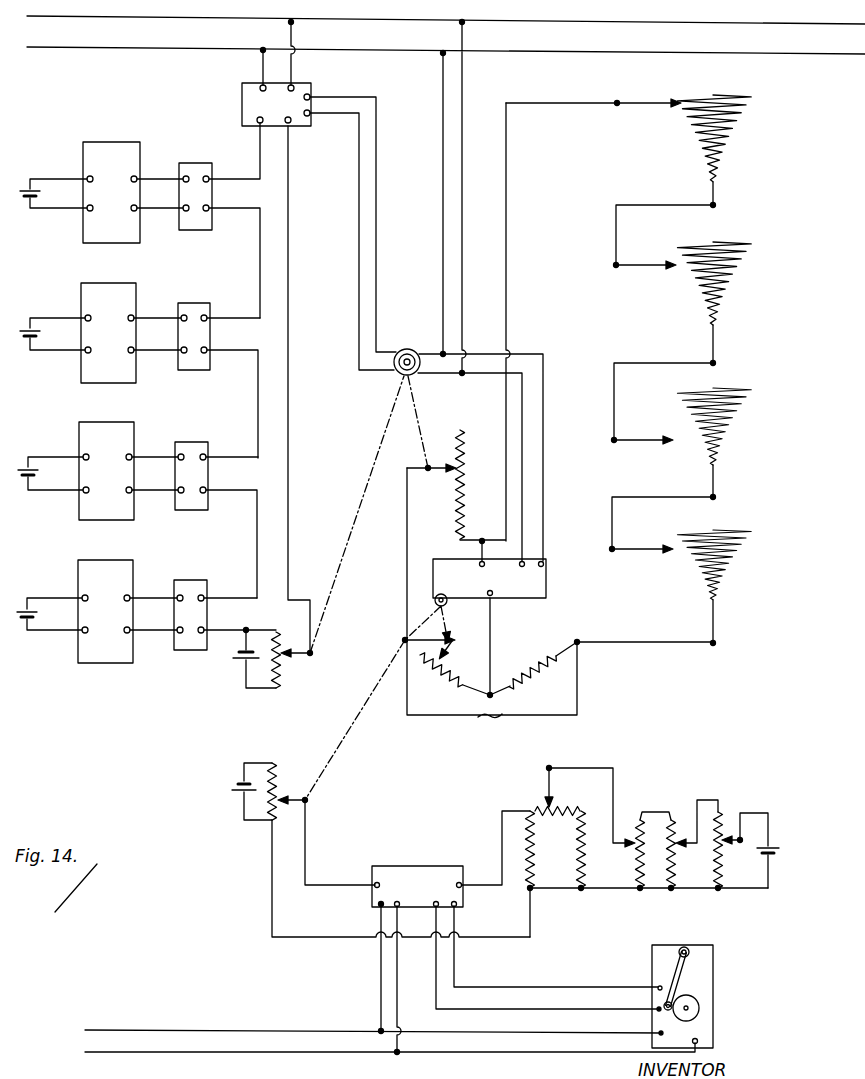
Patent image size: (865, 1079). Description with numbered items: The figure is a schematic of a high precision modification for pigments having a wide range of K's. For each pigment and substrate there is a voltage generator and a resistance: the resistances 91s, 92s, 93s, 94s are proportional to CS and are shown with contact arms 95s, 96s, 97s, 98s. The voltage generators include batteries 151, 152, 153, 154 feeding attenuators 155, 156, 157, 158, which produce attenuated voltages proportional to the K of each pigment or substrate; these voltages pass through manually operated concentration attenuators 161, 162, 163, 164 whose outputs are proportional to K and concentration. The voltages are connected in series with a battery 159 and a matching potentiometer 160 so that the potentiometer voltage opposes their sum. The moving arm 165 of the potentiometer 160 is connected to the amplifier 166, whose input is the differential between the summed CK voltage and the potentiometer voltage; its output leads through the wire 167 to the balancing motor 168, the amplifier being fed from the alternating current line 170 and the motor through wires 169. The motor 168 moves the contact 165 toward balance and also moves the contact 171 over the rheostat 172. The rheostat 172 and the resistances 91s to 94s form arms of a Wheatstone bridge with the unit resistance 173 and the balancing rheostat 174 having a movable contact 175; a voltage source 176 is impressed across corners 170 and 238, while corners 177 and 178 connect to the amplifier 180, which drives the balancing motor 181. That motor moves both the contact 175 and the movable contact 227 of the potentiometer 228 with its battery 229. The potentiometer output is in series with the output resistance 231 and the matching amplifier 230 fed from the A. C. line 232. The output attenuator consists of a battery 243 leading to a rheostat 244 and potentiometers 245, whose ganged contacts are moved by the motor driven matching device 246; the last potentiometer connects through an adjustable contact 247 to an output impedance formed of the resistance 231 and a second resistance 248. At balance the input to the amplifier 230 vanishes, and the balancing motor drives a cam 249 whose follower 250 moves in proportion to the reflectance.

The battery 151 is at (25, 186).
The battery 152 is at (25, 326).
The battery 153 is at (23, 465).
The battery 154 is at (22, 607).
The attenuator 155 is at (147, 132).
The attenuator 156 is at (133, 290).
The attenuator 157 is at (130, 430).
The attenuator 158 is at (130, 567).
The battery 159 is at (238, 663).
The matching potentiometer 160 is at (278, 690).
The concentration attenuator 161 is at (216, 150).
The concentration attenuator 162 is at (214, 290).
The concentration attenuator 163 is at (212, 430).
The concentration attenuator 164 is at (211, 567).
The moving arm 165 is at (296, 658).
The amplifier 166 is at (310, 130).
The wire 167 is at (357, 292).
The balancing motor 168 is at (395, 372).
The wires 169 is at (430, 24).
The alternating current line 170 is at (405, 640).
The contact 171 is at (440, 465).
The rheostat 172 is at (460, 430).
The unit resistance 173 is at (533, 668).
The balancing rheostat 174 is at (451, 679).
The movable contact 175 is at (443, 655).
The source of voltage 176 is at (492, 607).
The bridge corner 177 is at (470, 542).
The bridge corner 178 is at (495, 698).
The amplifier 180 is at (546, 592).
The balancing motor 181 is at (448, 606).
The movable contact 227 is at (306, 803).
The potentiometer 228 is at (274, 764).
The battery 229 is at (233, 791).
The matching amplifier 230 is at (372, 866).
The output resistance 231 is at (535, 870).
The A. C. line 232 is at (233, 1066).
The bridge corner 238 is at (582, 636).
The battery 243 is at (777, 858).
The rheostat 244 is at (722, 822).
The potentiometers 245 is at (667, 818).
The motor driven matching device 246 is at (708, 1022).
The adjustable contact 247 is at (540, 790).
The second resistance 248 is at (586, 868).
The cam 249 is at (700, 1000).
The cam follower 250 is at (664, 1013).
The resistance 91s is at (733, 110).
The resistance 92s is at (733, 258).
The resistance 93s is at (730, 405).
The resistance 94s is at (730, 545).
The contact arm 95s is at (648, 103).
The contact arm 96s is at (645, 265).
The contact arm 97s is at (644, 440).
The contact arm 98s is at (643, 549).